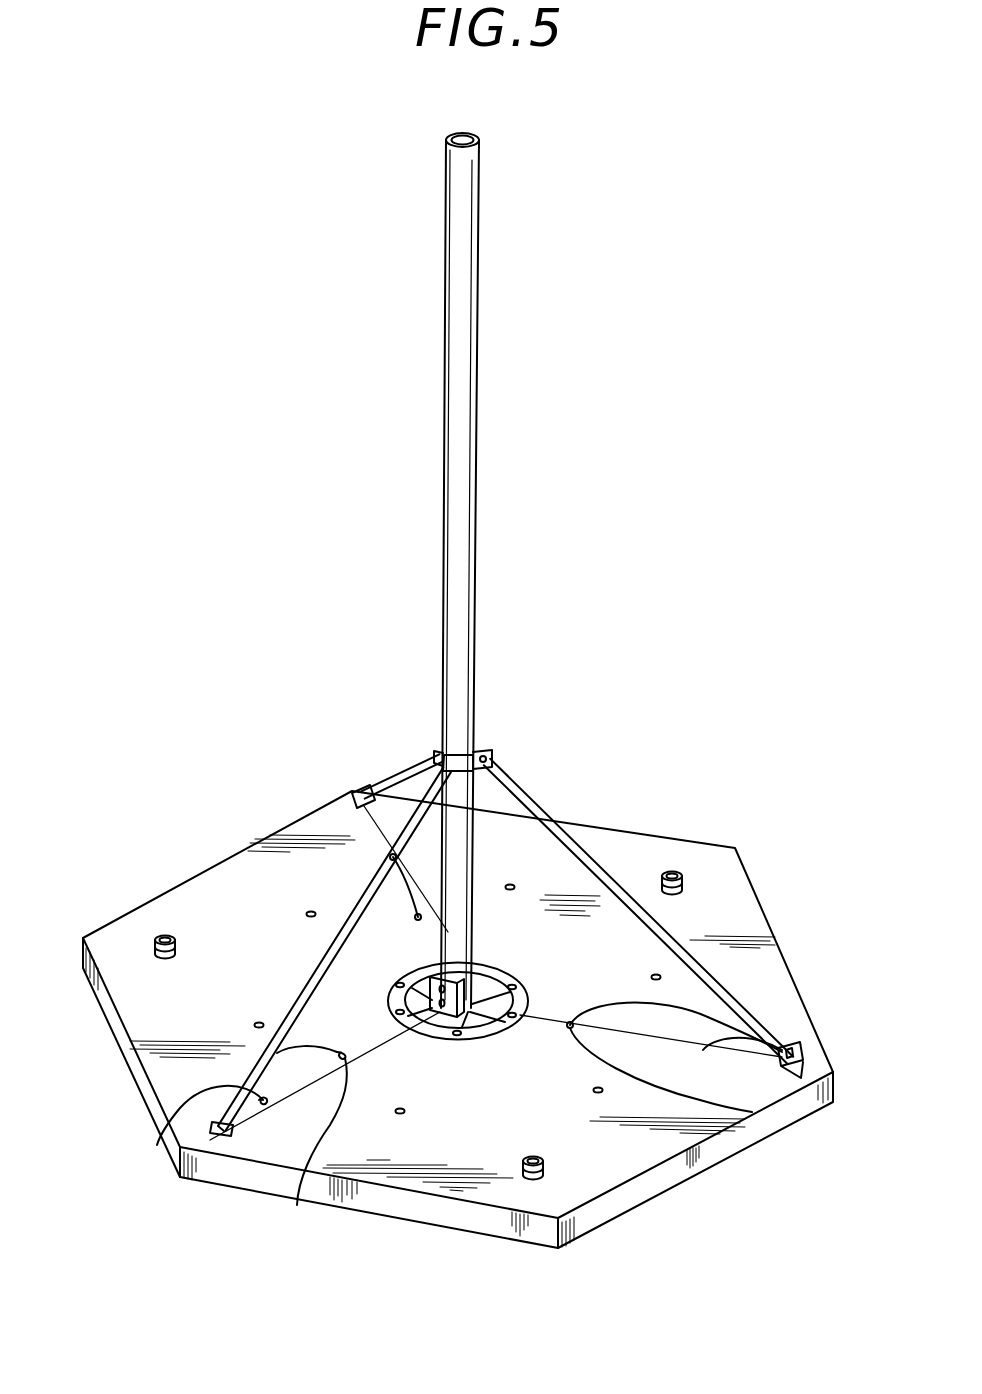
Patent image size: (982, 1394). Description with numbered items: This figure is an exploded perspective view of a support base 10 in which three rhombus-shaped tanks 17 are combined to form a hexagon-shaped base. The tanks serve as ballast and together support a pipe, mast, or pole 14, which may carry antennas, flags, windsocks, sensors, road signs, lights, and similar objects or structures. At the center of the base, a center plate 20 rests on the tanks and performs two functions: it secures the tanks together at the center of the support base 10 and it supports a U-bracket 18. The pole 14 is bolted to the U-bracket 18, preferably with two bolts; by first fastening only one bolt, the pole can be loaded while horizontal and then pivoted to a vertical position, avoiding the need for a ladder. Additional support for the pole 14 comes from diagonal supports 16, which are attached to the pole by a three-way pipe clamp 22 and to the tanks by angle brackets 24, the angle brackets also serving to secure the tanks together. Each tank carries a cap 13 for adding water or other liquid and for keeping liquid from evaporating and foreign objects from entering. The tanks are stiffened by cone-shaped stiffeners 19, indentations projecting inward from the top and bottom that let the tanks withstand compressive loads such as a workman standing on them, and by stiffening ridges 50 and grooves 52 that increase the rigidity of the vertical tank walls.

The support base 10 is at (240, 617).
The cap 13 is at (158, 936).
The pole 14 is at (482, 375).
The diagonal supports 16 is at (397, 775).
The rhombus-shaped tanks 17 is at (175, 897).
The U-bracket 18 is at (462, 1008).
The stiffeners 19 is at (310, 913).
The center plate 20 is at (522, 986).
The three-way pipe clamp 22 is at (488, 753).
The angle brackets 24 is at (362, 790).
The stiffening ridges 50 is at (418, 917).
The grooves 52 is at (420, 915).